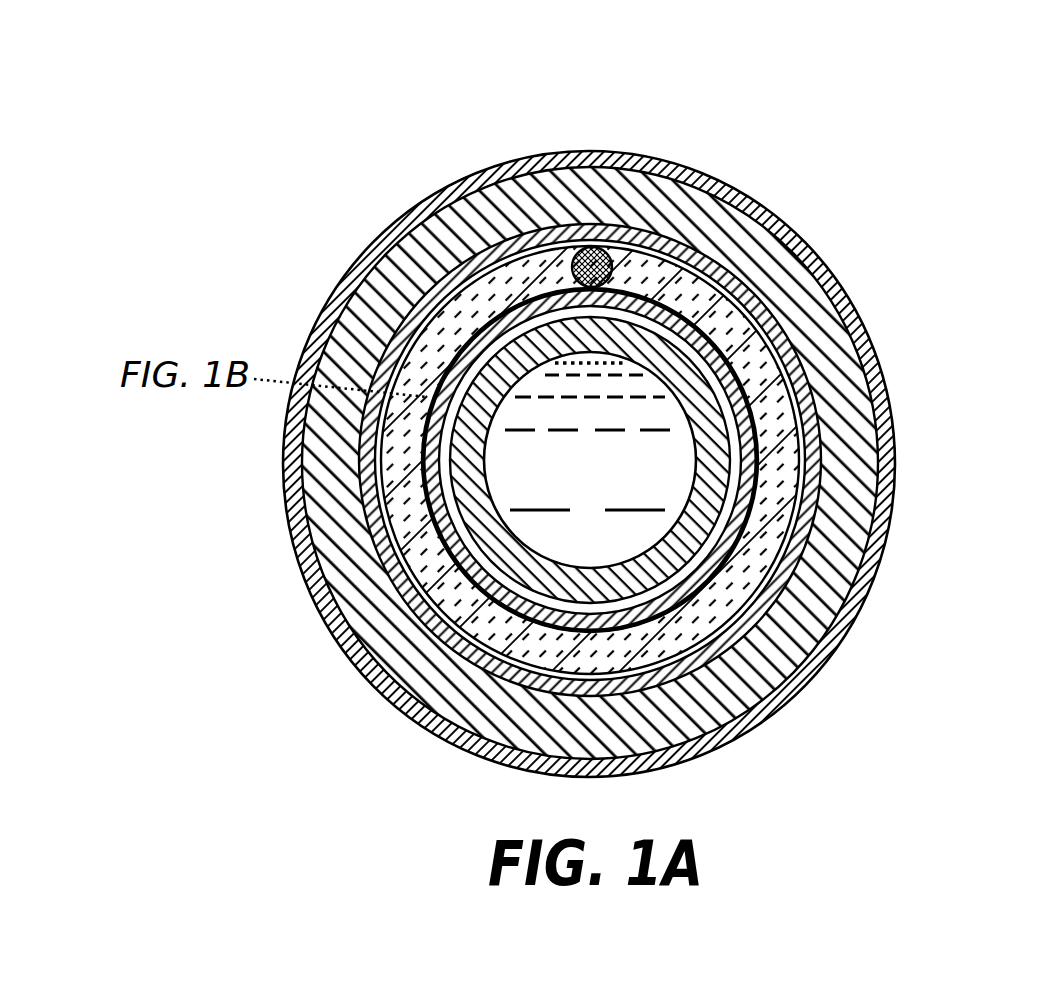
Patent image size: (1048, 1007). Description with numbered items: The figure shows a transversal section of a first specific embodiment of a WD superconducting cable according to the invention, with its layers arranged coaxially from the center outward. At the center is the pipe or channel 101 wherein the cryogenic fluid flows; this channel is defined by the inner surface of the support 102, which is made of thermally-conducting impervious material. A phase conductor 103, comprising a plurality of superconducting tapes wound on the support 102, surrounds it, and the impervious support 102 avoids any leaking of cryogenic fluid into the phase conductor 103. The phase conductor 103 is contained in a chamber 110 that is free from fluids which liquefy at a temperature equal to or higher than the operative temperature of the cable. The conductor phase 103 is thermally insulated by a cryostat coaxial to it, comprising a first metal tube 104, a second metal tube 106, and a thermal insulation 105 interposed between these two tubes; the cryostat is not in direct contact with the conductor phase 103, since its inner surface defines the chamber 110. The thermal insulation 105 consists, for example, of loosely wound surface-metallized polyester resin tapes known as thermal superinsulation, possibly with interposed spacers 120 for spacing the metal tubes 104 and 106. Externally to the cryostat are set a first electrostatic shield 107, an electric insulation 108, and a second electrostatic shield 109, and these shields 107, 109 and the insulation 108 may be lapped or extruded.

The pipe or channel 101 is at (610, 474).
The support 102 is at (707, 533).
The phase conductor 103 is at (736, 500).
The first metal tube 104 is at (752, 483).
The thermal insulation 105 is at (780, 427).
The second metal tube 106 is at (783, 353).
The first electrostatic shield 107 is at (747, 297).
The electric insulation 108 is at (708, 197).
The second electrostatic shield 109 is at (650, 152).
The chamber 110 is at (487, 327).
The spacers 120 is at (592, 247).